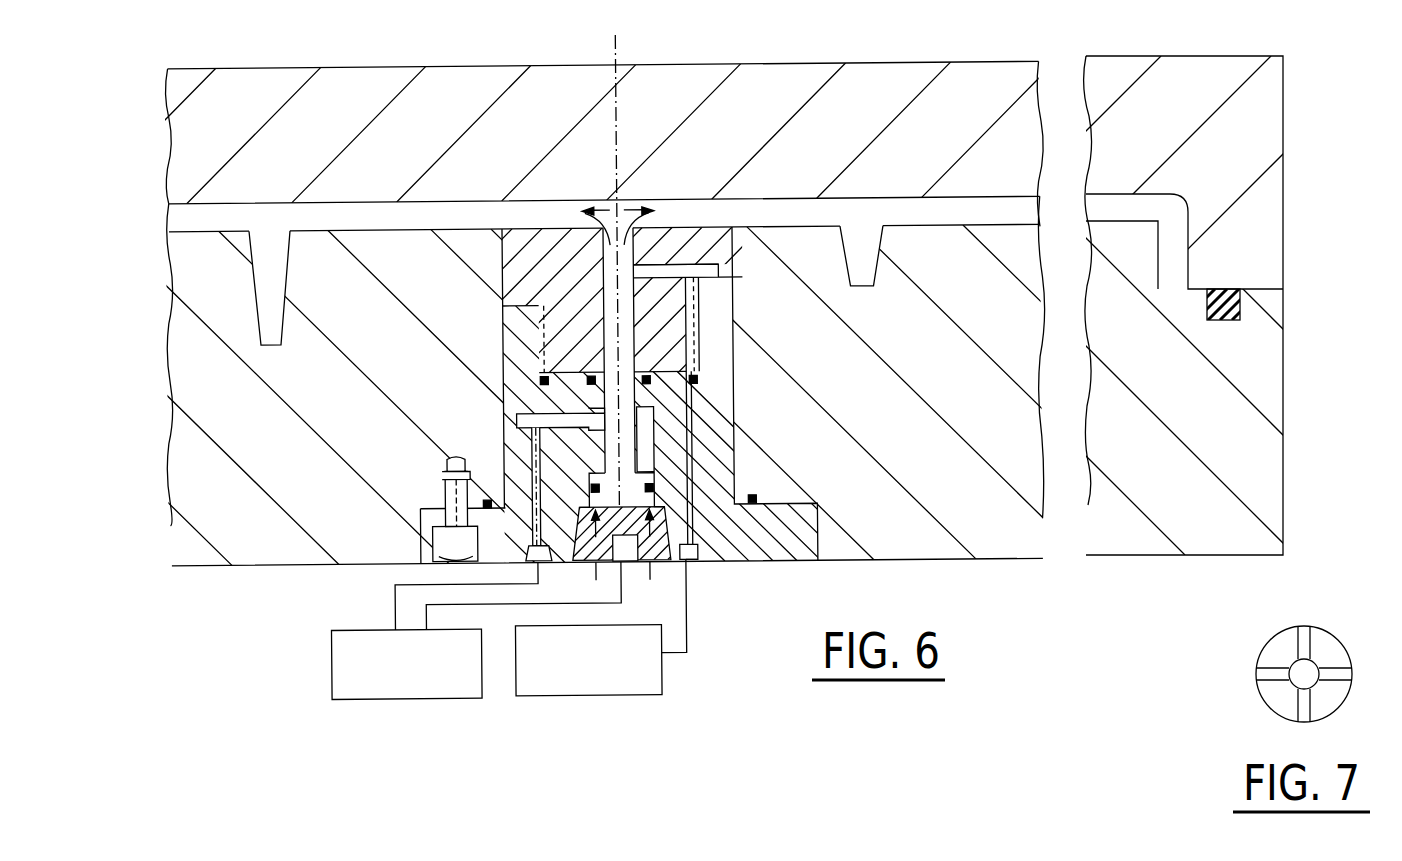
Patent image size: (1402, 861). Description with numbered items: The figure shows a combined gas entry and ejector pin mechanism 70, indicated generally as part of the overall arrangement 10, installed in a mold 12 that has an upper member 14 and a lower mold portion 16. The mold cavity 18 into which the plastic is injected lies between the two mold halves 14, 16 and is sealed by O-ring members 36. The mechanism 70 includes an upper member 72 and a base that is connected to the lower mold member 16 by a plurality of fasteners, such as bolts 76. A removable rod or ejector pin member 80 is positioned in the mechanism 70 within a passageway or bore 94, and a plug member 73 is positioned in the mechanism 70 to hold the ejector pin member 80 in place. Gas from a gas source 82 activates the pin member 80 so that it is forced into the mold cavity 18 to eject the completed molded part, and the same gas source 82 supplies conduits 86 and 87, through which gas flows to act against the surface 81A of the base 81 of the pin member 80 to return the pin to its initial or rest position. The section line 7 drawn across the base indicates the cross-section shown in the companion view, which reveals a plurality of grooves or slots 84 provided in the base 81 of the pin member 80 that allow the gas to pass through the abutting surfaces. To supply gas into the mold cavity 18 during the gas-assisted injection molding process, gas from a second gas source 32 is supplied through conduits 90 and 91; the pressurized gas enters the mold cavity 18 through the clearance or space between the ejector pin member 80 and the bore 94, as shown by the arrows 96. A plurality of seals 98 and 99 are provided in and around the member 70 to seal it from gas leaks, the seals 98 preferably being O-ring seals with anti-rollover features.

In FIG. 6, the stripper unit 10 is at (235, 36).
In FIG. 6, the mold 12 is at (178, 145).
In FIG. 6, the upper member 14 is at (438, 69).
In FIG. 6, the lower mold portion 16 is at (268, 576).
In FIG. 6, the mold cavity 18 is at (366, 200).
In FIG. 6, the gas source 32 is at (600, 696).
In FIG. 6, the O-ring member 36 is at (1222, 289).
In FIG. 6, the combined gas entry and ejector pin mechanism 70 is at (758, 555).
In FIG. 6, the upper member 72 is at (510, 264).
In FIG. 6, the plug member 73 is at (690, 562).
In FIG. 6, the bolt 76 is at (440, 480).
In FIG. 6, the ejector pin member 80 is at (625, 303).
In FIG. 6, the base of the pin member 81 is at (680, 460).
In FIG. 7, the base of the pin member 81 is at (1323, 642).
In FIG. 6, the surface of the base 81A is at (660, 455).
In FIG. 6, the gas source 82 is at (328, 660).
In FIG. 7, the grooves or slots 84 is at (1300, 708).
In FIG. 6, the conduit 86 is at (585, 500).
In FIG. 6, the conduit 87 is at (530, 405).
In FIG. 6, the conduit 90 is at (688, 514).
In FIG. 6, the conduit 91 is at (692, 262).
In FIG. 6, the passageway or bore 94 is at (603, 260).
In FIG. 6, the arrows 96 is at (630, 214).
In FIG. 6, the seal 98 is at (585, 372).
In FIG. 6, the seal 99 is at (487, 498).
In FIG. 6, the section line 7— 7 is at (620, 576).